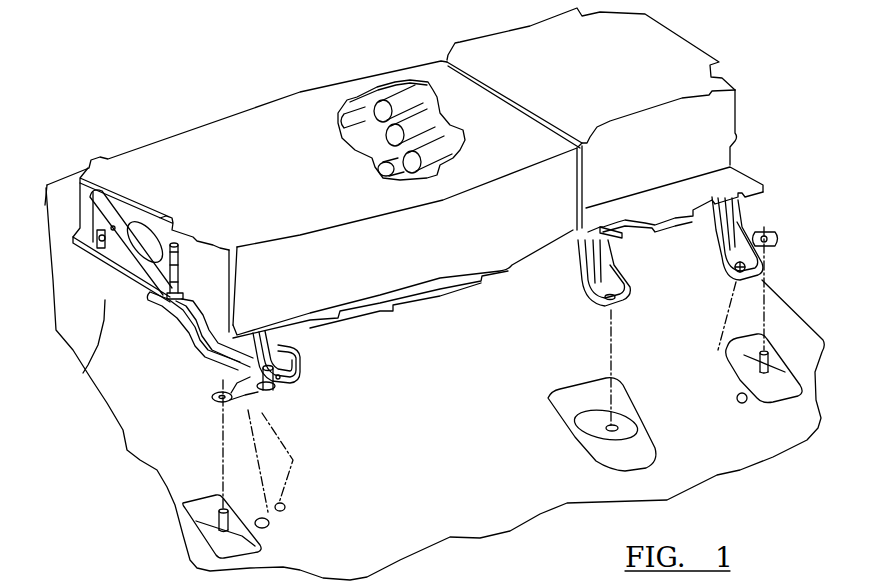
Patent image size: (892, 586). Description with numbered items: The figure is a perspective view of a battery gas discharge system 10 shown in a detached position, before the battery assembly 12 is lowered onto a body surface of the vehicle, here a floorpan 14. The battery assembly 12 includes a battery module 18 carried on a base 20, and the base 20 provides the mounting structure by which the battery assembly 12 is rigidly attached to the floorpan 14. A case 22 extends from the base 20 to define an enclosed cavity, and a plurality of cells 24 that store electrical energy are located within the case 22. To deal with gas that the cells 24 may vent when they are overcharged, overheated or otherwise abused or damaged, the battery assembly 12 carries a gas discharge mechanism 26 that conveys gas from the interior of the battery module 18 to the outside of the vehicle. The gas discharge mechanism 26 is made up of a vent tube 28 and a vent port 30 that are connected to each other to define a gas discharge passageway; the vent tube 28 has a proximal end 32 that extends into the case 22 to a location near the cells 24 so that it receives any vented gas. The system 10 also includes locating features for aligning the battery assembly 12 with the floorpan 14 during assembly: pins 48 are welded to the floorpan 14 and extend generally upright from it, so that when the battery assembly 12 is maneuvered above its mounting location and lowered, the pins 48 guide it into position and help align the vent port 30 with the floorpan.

The battery gas discharge system 10 is at (151, 70).
The battery assembly 12 is at (156, 131).
The floorpan 14 is at (85, 375).
The battery module 18 is at (672, 53).
The base 20 is at (777, 175).
The case 22 is at (719, 147).
The cells 24 is at (384, 104).
The gas discharge mechanism 26 is at (83, 268).
The vent tube 28 is at (213, 348).
The vent port 30 is at (247, 397).
The proximal end 32 is at (348, 115).
The pins 48 is at (222, 520).